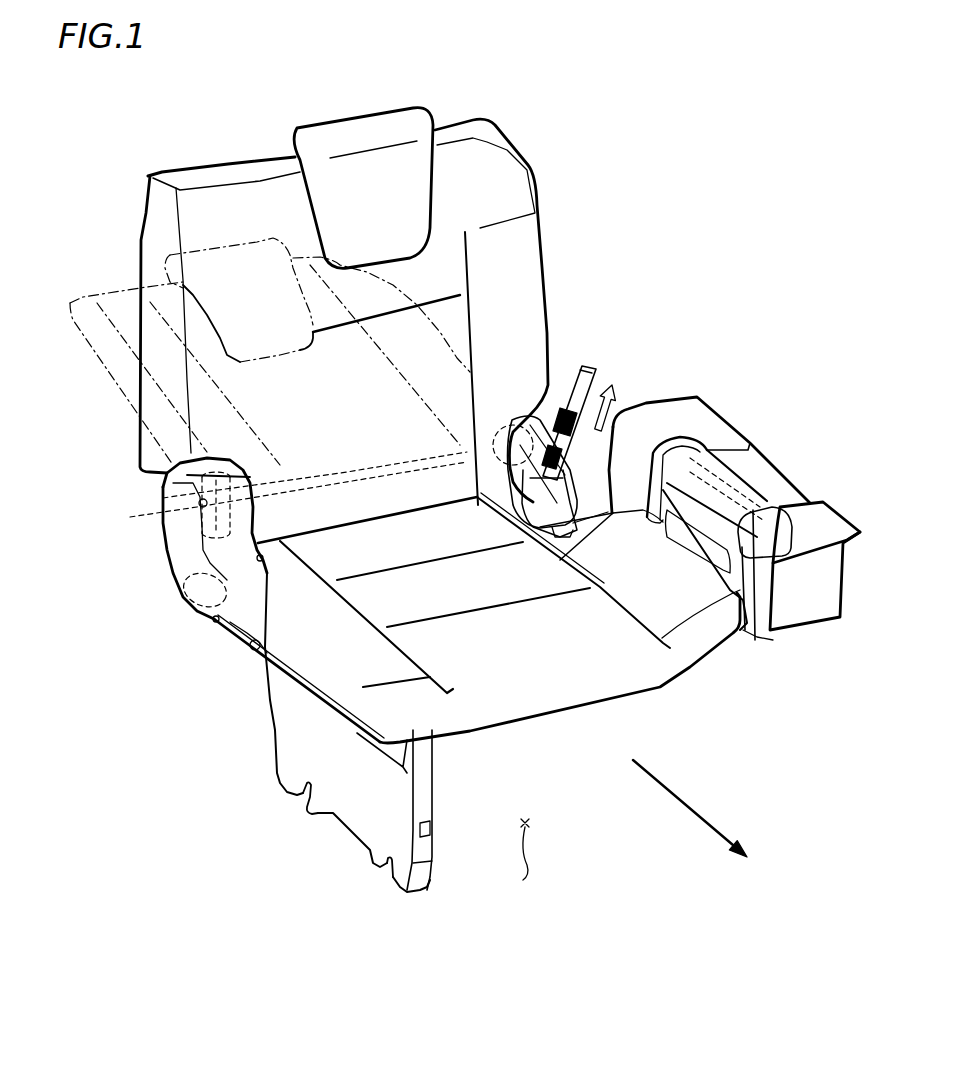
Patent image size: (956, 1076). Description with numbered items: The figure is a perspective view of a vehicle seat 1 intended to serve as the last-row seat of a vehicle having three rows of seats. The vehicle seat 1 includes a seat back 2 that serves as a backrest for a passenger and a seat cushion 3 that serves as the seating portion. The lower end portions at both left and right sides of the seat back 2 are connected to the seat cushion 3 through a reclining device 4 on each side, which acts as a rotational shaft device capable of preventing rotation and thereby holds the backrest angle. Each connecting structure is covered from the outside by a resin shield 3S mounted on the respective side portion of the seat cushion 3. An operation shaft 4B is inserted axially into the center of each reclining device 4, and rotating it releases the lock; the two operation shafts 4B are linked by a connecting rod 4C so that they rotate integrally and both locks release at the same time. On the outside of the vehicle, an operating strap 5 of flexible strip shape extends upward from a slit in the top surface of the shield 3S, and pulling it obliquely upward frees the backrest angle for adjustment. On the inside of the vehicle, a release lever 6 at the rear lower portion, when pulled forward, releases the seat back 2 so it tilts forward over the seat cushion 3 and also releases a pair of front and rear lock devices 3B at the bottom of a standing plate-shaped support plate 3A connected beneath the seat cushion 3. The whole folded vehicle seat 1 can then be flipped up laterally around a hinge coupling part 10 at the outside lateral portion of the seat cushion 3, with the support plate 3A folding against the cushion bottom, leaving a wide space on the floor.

The vehicle seat 1 is at (583, 158).
The seat back 2 is at (520, 253).
The seat cushion 3 is at (540, 682).
The support plate 3A is at (290, 728).
The lock devices 3B is at (307, 807).
The shield 3S is at (180, 553).
The reclining device 4 is at (163, 498).
The operation shaft 4B is at (170, 513).
The connecting rod 4C is at (342, 472).
The operating strap 5 is at (572, 450).
The release lever 6 is at (193, 613).
The hinge coupling part 10 is at (753, 470).